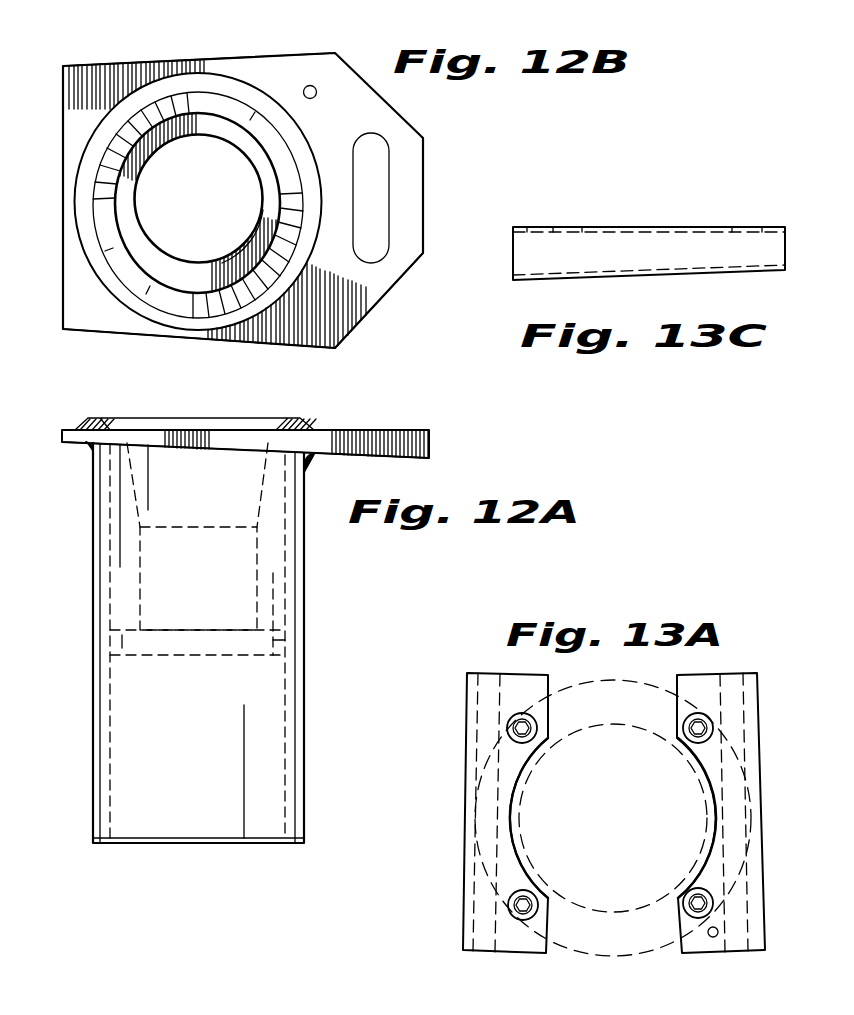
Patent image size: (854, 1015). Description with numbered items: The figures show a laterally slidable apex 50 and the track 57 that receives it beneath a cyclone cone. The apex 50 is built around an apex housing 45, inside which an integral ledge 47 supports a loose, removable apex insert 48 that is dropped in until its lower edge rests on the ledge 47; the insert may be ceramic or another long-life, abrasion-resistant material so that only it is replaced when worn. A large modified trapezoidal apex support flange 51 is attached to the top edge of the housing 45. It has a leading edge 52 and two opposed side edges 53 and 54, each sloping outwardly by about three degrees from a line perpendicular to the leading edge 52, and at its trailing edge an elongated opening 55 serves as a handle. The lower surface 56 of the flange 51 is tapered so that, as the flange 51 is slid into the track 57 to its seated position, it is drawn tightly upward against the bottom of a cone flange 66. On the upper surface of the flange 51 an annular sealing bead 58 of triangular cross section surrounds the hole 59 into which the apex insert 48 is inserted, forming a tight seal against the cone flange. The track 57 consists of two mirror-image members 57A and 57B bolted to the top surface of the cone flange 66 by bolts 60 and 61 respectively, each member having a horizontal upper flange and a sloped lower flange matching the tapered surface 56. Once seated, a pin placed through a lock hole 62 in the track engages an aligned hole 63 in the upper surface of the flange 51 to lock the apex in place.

In FIG. 12A, the apex housing 45 is at (303, 600).
In FIG. 12A, the integral ledge 47 is at (273, 642).
In FIG. 12B, the removable apex insert 48 is at (170, 263).
In FIG. 12A, the removable apex insert 48 is at (272, 544).
In FIG. 12B, the laterally slidable apex 50 is at (220, 201).
In FIG. 12A, the laterally slidable apex 50 is at (245, 616).
In FIG. 12B, the apex support flange 51 is at (300, 327).
In FIG. 12A, the apex support flange 51 is at (227, 460).
In FIG. 12B, the leading edge 52 is at (63, 220).
In FIG. 12B, the side edge 53 is at (173, 340).
In FIG. 12B, the side edge 54 is at (232, 54).
In FIG. 12B, the elongated opening 55 is at (370, 137).
In FIG. 12A, the elongated opening 55 is at (378, 432).
In FIG. 12A, the lower surface 56 is at (193, 453).
In FIG. 13A, the track 57 is at (571, 814).
In FIG. 13A, the track member 57A is at (526, 673).
In FIG. 13C, the track member 57B is at (653, 243).
In FIG. 13A, the track member 57B is at (714, 675).
In FIG. 12B, the sealing bead 58 is at (133, 293).
In FIG. 12A, the sealing bead 58 is at (313, 419).
In FIG. 12B, the hole 59 is at (140, 263).
In FIG. 12A, the hole 59 is at (279, 428).
In FIG. 13A, the bolts 60 is at (531, 912).
In FIG. 13C, the bolts 61 is at (742, 226).
In FIG. 13A, the bolts 61 is at (687, 910).
In FIG. 13C, the lock hole 62 is at (532, 226).
In FIG. 13A, the lock hole 62 is at (714, 940).
In FIG. 12B, the aligned hole 63 is at (318, 89).
In FIG. 13A, the cone flange 66 is at (611, 691).